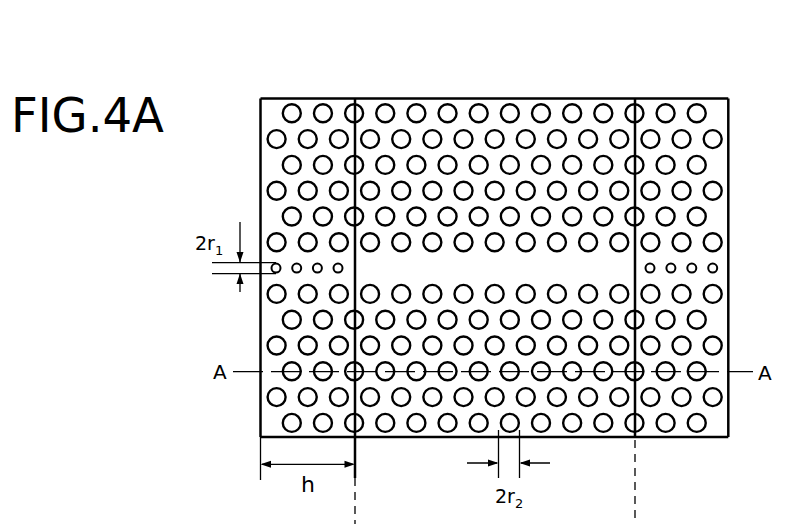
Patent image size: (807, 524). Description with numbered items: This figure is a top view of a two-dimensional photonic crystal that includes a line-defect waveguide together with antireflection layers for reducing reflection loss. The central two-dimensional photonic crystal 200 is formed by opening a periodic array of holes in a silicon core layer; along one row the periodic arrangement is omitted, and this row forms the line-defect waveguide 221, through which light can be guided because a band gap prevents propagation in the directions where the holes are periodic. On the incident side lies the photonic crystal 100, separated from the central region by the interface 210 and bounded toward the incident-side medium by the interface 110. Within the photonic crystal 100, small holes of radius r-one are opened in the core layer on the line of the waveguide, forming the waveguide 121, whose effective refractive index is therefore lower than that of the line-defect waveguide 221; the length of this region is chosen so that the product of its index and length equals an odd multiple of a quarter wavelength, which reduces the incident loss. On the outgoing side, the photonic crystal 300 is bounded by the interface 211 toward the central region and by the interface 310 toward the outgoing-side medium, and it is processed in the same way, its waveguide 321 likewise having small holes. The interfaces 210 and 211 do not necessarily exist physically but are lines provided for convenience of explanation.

The photonic crystal 100 is at (308, 98).
The interface 110 is at (260, 98).
The waveguide 121 is at (307, 263).
The two-dimensional photonic crystal 200 is at (495, 98).
The interface 210 is at (355, 98).
The interface 211 is at (635, 98).
The line-defect waveguide 221 is at (577, 272).
The photonic crystal 300 is at (682, 98).
The interface 310 is at (728, 98).
The waveguide 321 is at (683, 268).